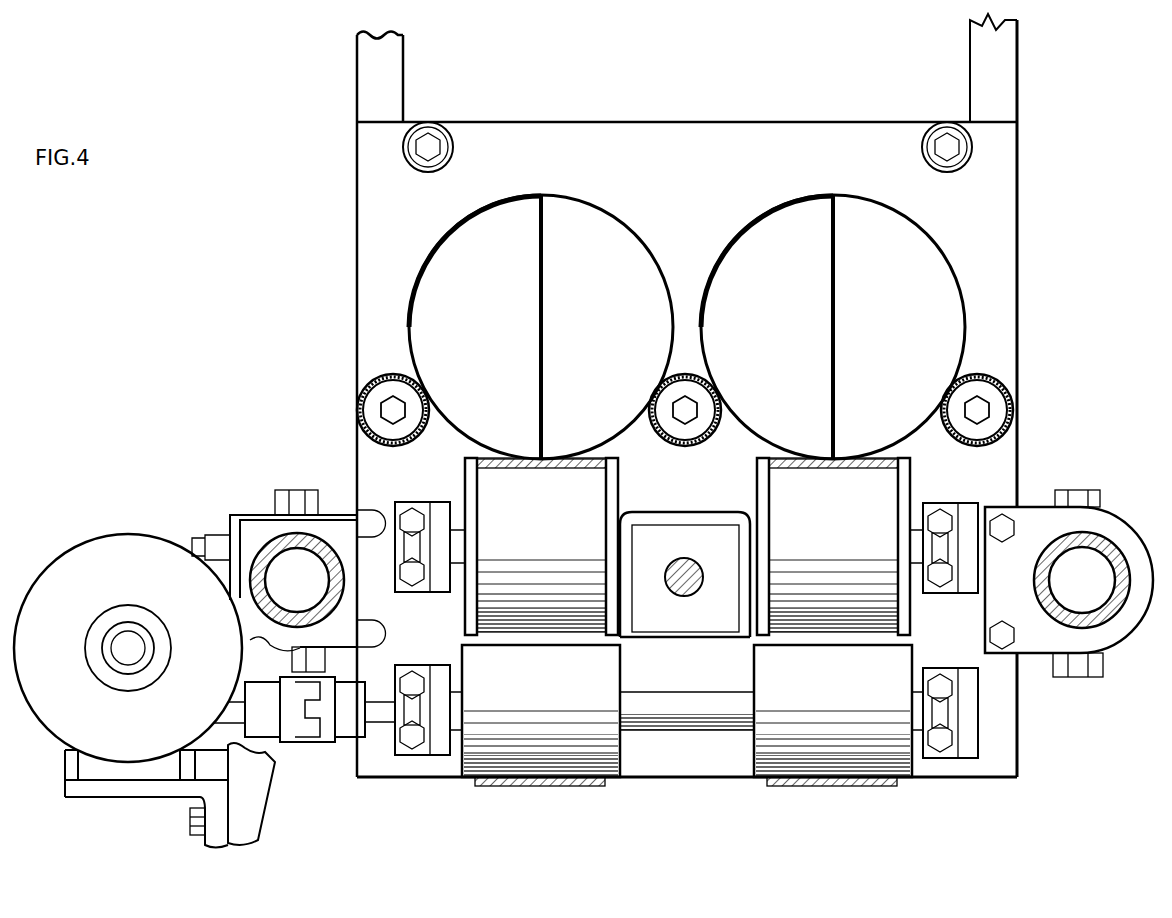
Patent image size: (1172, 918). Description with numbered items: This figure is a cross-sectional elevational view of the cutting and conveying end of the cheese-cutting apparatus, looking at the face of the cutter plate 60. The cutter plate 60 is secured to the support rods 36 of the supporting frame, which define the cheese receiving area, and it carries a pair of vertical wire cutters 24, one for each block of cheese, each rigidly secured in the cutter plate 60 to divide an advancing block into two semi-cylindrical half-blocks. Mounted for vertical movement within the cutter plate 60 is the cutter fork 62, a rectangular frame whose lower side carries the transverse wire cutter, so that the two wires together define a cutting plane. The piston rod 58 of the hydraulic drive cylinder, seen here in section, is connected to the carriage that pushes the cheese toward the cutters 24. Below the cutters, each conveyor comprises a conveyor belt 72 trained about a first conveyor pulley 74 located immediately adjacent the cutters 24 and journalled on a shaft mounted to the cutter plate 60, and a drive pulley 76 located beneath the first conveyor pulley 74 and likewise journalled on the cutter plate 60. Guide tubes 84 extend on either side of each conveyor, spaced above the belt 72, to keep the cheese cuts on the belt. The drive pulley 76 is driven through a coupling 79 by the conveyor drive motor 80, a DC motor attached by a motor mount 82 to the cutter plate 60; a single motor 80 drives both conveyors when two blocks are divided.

The cutter 24 is at (545, 293).
The support rods 36 is at (297, 532).
The piston rod 58 is at (686, 586).
The cutter plate 60 is at (1010, 192).
The cutter fork 62 is at (978, 63).
The conveyor belt 72 is at (687, 546).
The first conveyor pulley 74 is at (540, 541).
The drive pulley 76 is at (540, 686).
The coupling 79 is at (325, 737).
The conveyor drive motor 80 is at (143, 580).
The motor mount 82 is at (245, 520).
The guide tubes 84 is at (358, 410).